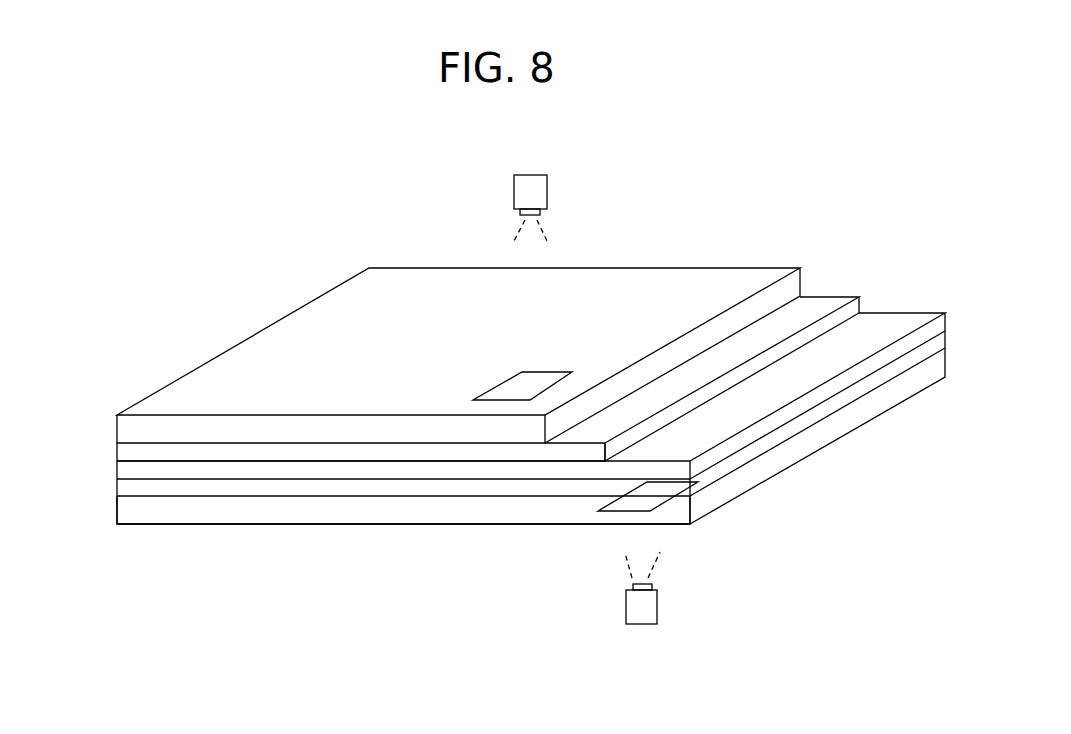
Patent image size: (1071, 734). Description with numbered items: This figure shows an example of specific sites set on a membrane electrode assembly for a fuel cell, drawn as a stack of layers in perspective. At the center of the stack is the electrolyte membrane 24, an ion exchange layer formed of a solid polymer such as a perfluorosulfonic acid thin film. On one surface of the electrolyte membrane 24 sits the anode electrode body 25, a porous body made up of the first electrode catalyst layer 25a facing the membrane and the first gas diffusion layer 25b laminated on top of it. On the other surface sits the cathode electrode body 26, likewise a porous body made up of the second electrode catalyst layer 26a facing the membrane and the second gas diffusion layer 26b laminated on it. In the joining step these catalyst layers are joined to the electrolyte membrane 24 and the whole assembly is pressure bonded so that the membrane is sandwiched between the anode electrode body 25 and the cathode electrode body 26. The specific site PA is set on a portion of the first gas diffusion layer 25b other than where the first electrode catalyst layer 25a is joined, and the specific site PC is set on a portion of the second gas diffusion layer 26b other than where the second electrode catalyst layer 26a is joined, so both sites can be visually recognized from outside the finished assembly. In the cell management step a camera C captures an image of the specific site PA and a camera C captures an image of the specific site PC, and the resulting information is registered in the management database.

The electrolyte membrane 24 is at (890, 332).
The anode electrode body 25 is at (445, 360).
The first electrode catalyst layer 25a is at (117, 452).
The first gas diffusion layer 25b is at (282, 340).
The cathode electrode body 26 is at (361, 533).
The second electrode catalyst layer 26a is at (117, 490).
The second gas diffusion layer 26b is at (282, 508).
The specific site PA is at (526, 385).
The specific site PC is at (640, 512).
The camera C is at (522, 178).